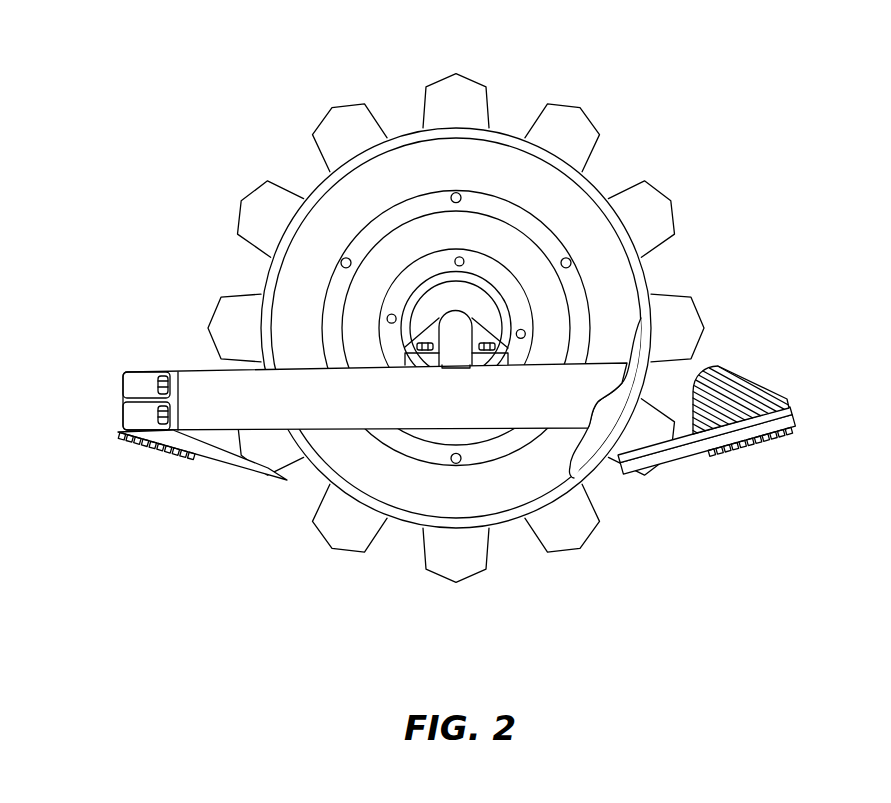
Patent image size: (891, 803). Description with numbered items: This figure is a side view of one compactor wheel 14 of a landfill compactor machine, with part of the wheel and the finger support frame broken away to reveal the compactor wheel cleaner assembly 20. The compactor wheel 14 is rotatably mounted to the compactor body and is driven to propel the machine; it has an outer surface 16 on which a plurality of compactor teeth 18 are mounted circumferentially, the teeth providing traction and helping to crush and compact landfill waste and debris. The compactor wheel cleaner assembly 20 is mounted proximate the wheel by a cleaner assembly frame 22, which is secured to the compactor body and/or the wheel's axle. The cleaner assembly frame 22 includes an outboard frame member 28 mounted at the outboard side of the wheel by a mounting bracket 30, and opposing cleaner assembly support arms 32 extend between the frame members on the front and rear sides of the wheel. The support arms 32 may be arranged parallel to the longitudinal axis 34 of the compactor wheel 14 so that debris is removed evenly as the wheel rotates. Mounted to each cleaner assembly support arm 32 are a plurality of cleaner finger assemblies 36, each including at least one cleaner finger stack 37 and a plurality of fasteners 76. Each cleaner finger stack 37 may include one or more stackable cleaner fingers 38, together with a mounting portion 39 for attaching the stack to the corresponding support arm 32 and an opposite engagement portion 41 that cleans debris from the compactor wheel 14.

The compactor wheel 14 is at (419, 304).
The outer surface 16 is at (456, 304).
The compactor teeth 18 is at (530, 122).
The compactor wheel cleaner assembly 20 is at (345, 396).
The cleaner assembly frame 22 is at (205, 370).
The outboard frame member 28 is at (444, 406).
The mounting bracket 30 is at (468, 332).
The cleaner assembly support arm 32 is at (128, 378).
The longitudinal axis 34 is at (456, 333).
The cleaner finger assembly 36 is at (456, 447).
The cleaner finger stack 37 is at (124, 404).
The cleaner finger 38 is at (245, 468).
The mounting portion 39 is at (120, 421).
The engagement portion 41 is at (293, 466).
The fasteners 76 is at (190, 462).